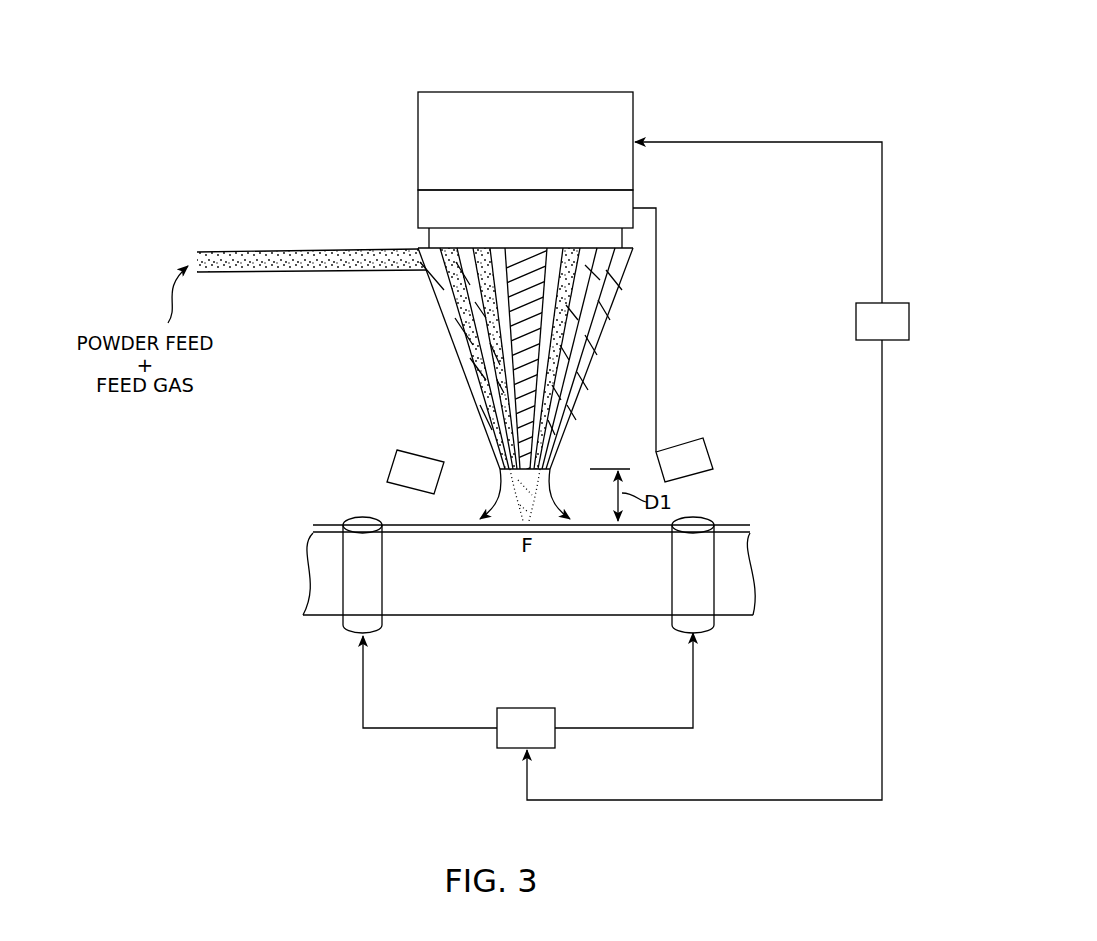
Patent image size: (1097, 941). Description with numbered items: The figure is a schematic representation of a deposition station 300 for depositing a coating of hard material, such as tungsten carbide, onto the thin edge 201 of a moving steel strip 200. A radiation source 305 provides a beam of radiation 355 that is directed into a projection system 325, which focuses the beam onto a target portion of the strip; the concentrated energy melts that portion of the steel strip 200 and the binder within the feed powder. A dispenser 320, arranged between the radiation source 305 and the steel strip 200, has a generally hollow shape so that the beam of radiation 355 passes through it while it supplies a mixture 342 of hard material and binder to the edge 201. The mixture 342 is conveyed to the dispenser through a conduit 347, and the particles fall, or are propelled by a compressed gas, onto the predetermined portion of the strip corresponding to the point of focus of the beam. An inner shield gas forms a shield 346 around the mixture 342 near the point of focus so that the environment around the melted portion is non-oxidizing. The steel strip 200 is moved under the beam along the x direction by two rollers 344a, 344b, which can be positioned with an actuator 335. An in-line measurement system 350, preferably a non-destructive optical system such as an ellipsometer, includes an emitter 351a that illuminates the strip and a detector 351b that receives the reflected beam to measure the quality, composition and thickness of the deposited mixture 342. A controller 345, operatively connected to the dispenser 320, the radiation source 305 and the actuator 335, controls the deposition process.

The deposition station 300 is at (774, 60).
The radiation source 305 is at (606, 110).
The projection system 325 is at (633, 198).
The beam of radiation 355 is at (528, 256).
The conduit 347 is at (310, 256).
The dispenser 320 is at (424, 316).
The mixture 342 is at (570, 372).
The shield 346 is at (502, 478).
The emitter 351a is at (395, 462).
The detector 351b is at (706, 447).
The in-line measurement system 350 is at (718, 469).
The edge 201 is at (395, 525).
The steel strip 200 is at (437, 603).
The roller 344a is at (350, 614).
The roller 344b is at (690, 625).
The actuator 335 is at (622, 570).
The controller 345 is at (772, 241).